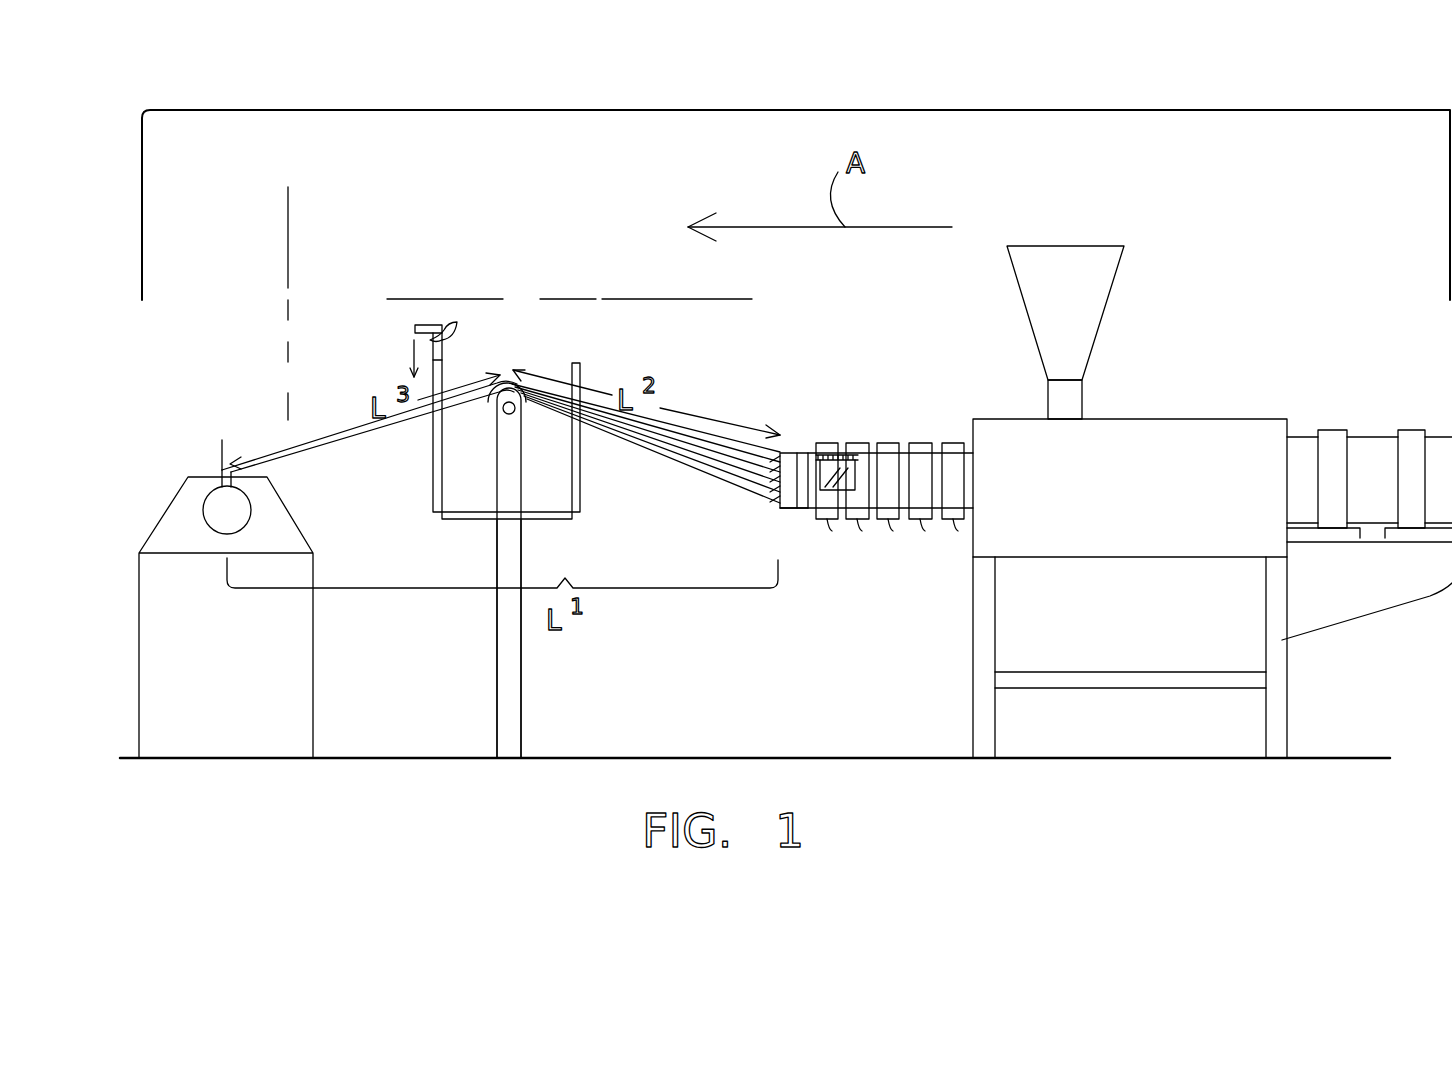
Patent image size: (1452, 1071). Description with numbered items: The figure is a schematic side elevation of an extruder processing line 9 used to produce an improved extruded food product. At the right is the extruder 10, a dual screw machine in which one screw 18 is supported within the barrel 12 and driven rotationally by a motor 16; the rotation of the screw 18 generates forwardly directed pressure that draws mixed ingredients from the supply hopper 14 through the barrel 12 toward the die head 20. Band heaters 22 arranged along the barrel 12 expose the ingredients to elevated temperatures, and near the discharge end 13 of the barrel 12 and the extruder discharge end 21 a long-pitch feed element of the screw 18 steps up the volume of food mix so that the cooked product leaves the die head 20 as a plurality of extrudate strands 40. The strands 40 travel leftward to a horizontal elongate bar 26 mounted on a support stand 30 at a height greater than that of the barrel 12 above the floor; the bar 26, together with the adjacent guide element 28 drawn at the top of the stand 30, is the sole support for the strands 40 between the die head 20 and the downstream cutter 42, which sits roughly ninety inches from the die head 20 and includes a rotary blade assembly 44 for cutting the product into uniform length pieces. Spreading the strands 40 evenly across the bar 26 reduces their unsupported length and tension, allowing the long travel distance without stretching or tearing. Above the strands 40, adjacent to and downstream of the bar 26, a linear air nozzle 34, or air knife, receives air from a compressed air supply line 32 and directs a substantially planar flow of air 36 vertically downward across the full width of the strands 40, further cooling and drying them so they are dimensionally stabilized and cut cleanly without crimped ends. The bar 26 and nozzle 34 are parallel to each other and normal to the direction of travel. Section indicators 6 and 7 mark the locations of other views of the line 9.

The extruder processing line 9 is at (770, 110).
The section line 6- 6 is at (358, 205).
The section line 7- 7 is at (407, 323).
The extruder 10 is at (1278, 350).
The barrel 12 is at (963, 412).
The discharge end of barrel 13 is at (800, 517).
The supply hopper 14 is at (1118, 270).
The motor 16 is at (1372, 450).
The screw 18 is at (858, 490).
The die head 20 is at (790, 452).
The extruder discharge end 21 is at (770, 508).
The band heaters 22 is at (920, 443).
The horizontal elongate bar 26 is at (470, 457).
The guide roller 28 is at (580, 363).
The support stand 30 is at (521, 710).
The compressed air supply line 32 is at (458, 338).
The linear air nozzle 34 is at (415, 333).
The flow of air 36 is at (414, 353).
The extrudate strands 40 is at (676, 455).
The cutter 42 is at (313, 668).
The rotary blade assembly 44 is at (204, 513).